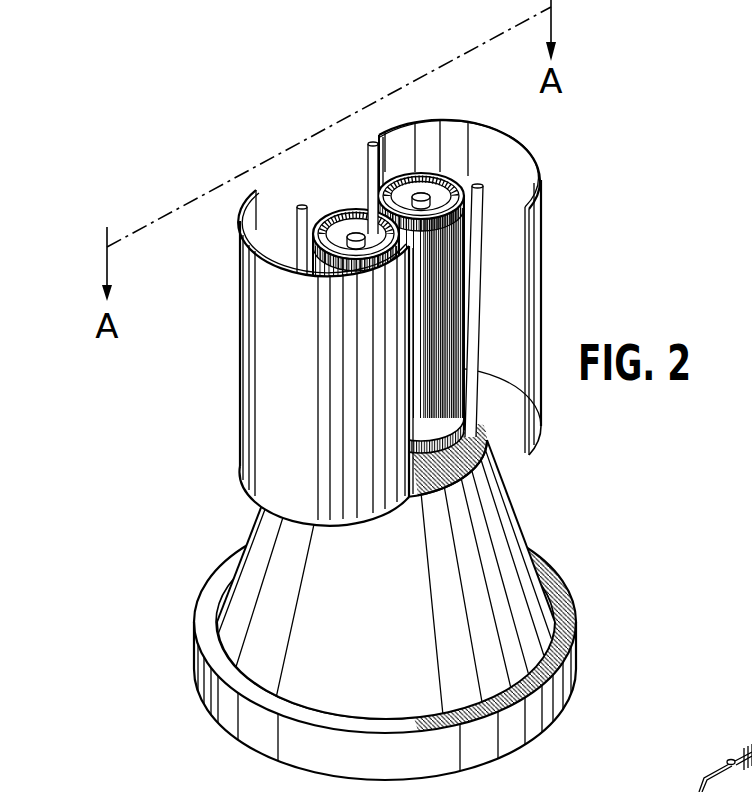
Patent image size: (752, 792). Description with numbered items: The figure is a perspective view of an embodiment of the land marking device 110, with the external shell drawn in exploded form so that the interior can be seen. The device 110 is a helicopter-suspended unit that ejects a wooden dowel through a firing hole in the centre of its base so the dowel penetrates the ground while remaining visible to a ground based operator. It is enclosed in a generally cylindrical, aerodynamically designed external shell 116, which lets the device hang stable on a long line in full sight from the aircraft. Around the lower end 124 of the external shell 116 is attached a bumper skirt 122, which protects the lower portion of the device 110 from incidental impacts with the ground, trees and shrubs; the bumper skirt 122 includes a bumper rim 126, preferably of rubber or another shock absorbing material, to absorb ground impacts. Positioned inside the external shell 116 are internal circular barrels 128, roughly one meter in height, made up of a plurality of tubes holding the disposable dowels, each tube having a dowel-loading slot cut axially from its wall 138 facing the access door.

The land marking device 110 is at (510, 543).
The external shell 116 is at (250, 358).
The bumper skirt 122 is at (245, 542).
The lower end 124 is at (487, 440).
The bumper rim 126 is at (230, 722).
The internal circular barrel 128 is at (340, 208).
The wall 138 is at (463, 317).